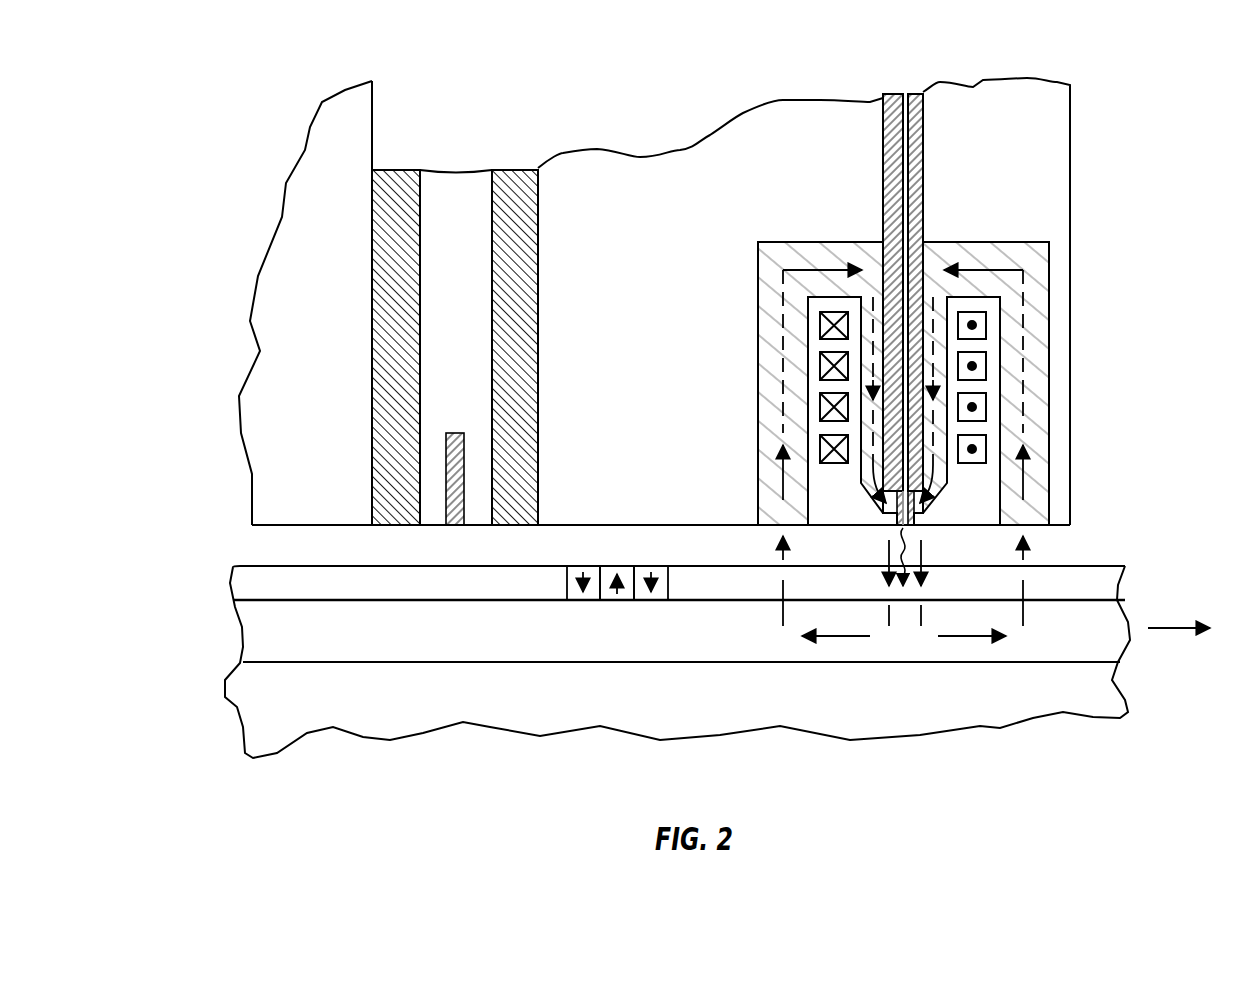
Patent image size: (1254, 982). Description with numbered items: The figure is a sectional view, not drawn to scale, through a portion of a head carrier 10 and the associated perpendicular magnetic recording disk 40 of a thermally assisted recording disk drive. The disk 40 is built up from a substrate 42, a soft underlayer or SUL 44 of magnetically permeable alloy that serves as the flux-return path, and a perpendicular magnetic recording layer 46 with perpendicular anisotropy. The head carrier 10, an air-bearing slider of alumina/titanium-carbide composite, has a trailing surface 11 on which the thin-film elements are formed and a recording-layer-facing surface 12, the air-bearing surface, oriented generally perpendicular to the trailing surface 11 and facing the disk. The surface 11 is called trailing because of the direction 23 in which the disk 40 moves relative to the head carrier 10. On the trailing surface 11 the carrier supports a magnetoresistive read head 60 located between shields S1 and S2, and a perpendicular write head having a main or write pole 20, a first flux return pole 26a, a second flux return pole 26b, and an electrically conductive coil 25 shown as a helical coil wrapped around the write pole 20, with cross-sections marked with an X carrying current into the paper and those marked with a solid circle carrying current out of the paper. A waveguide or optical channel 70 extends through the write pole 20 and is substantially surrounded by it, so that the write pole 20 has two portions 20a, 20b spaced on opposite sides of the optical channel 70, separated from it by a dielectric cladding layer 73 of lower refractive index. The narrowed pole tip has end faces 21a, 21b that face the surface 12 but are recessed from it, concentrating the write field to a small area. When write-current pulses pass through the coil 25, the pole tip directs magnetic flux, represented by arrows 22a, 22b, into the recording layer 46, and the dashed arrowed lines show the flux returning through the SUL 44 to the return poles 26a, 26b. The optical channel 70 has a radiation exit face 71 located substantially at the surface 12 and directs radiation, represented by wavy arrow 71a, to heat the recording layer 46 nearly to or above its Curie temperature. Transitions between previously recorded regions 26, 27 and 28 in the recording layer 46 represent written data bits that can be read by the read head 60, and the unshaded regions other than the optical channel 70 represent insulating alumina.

The head carrier 10 is at (270, 118).
The trailing surface 11 is at (372, 125).
The recording-layer-facing surface 12 is at (558, 525).
The shield S1 is at (379, 321).
The shield S2 is at (535, 318).
The magnetoresistive read head 60 is at (453, 432).
The write pole 20 is at (850, 253).
The write pole portion 20a is at (866, 343).
The write pole portion 20b is at (944, 343).
The coil 25 is at (832, 317).
The first flux return pole 26a is at (770, 398).
The second flux return pole 26b is at (1035, 405).
The end face 21a is at (870, 497).
The end face 21b is at (935, 497).
The optical channel 70 is at (905, 94).
The cladding layer 73 is at (890, 147).
The radiation exit face 71 is at (906, 524).
The radiation 71a is at (900, 553).
The magnetic flux 22a is at (882, 577).
The magnetic flux 22b is at (930, 577).
The direction 23 is at (1178, 630).
The disk 40 is at (222, 740).
The substrate 42 is at (1000, 727).
The SUL 44 is at (250, 630).
The perpendicular magnetic recording layer 46 is at (240, 583).
The previously recorded region 26 is at (652, 603).
The previously recorded region 27 is at (620, 603).
The previously recorded region 28 is at (585, 603).